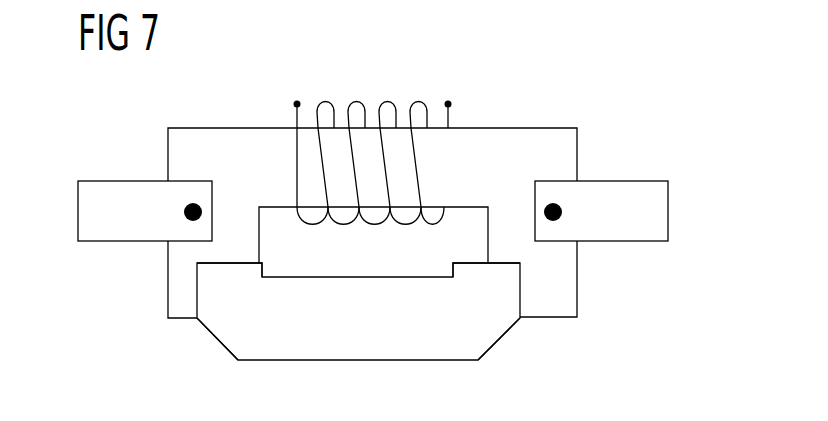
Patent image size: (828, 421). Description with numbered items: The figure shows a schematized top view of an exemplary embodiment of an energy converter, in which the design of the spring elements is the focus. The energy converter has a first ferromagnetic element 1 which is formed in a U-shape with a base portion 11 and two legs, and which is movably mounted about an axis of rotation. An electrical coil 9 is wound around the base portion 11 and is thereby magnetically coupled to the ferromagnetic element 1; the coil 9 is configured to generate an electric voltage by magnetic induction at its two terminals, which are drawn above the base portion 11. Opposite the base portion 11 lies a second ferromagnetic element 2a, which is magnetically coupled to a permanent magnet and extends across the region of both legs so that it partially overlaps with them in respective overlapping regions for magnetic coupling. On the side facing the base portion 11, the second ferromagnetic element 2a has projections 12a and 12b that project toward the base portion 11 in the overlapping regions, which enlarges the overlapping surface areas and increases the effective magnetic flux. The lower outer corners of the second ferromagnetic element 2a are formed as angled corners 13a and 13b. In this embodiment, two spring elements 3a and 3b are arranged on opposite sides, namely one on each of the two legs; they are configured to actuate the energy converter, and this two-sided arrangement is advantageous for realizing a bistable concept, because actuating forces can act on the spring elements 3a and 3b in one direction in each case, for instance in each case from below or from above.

The ferromagnetic element 1 is at (140, 128).
The electrical coil 9 is at (293, 137).
The base portion 11 is at (570, 143).
The spring element 3a is at (128, 233).
The spring element 3b is at (620, 230).
The second ferromagnetic element 2a is at (353, 350).
The projection 12a is at (230, 282).
The projection 12b is at (487, 281).
The angled corner 13a is at (216, 338).
The angled corner 13b is at (498, 338).